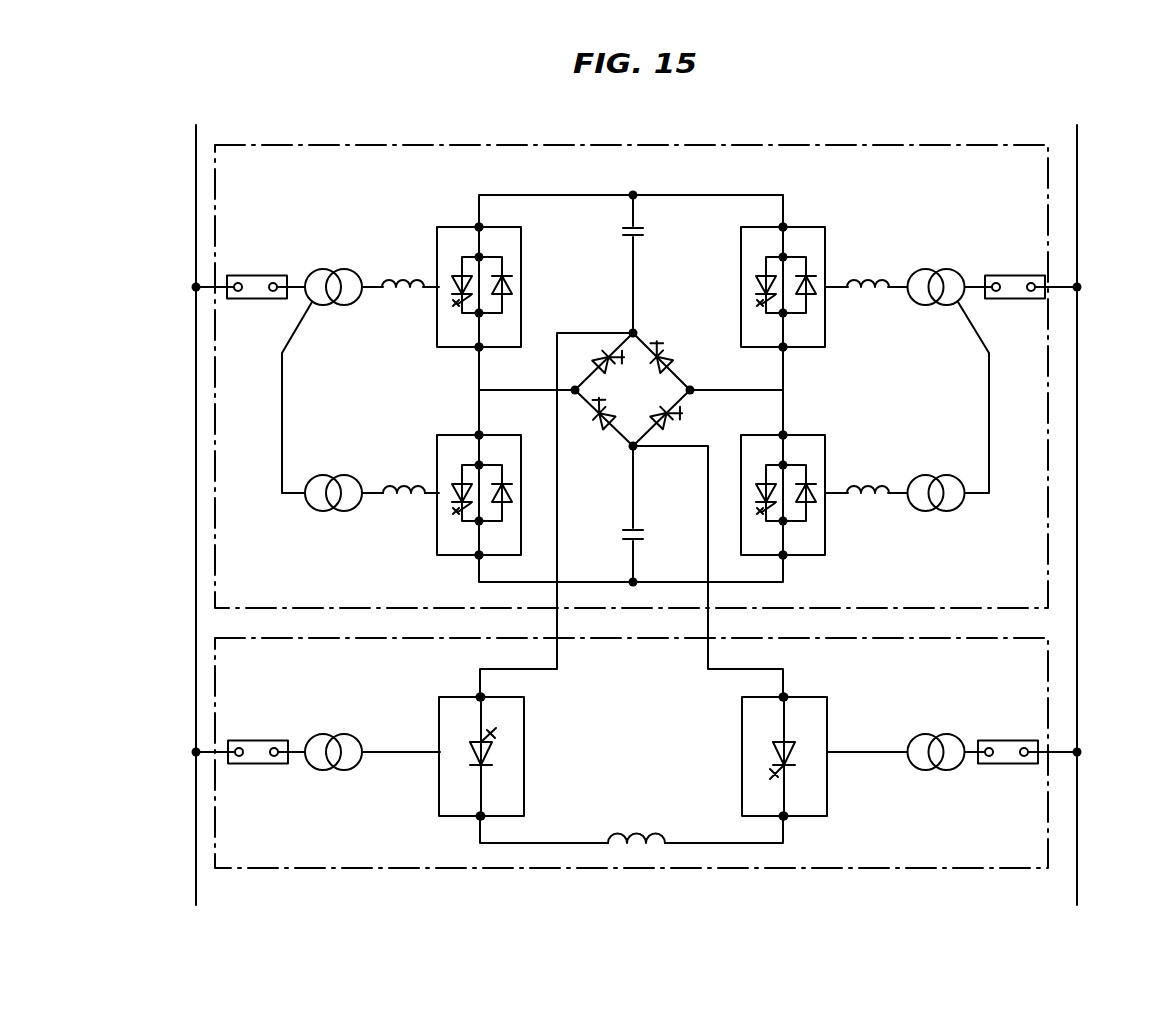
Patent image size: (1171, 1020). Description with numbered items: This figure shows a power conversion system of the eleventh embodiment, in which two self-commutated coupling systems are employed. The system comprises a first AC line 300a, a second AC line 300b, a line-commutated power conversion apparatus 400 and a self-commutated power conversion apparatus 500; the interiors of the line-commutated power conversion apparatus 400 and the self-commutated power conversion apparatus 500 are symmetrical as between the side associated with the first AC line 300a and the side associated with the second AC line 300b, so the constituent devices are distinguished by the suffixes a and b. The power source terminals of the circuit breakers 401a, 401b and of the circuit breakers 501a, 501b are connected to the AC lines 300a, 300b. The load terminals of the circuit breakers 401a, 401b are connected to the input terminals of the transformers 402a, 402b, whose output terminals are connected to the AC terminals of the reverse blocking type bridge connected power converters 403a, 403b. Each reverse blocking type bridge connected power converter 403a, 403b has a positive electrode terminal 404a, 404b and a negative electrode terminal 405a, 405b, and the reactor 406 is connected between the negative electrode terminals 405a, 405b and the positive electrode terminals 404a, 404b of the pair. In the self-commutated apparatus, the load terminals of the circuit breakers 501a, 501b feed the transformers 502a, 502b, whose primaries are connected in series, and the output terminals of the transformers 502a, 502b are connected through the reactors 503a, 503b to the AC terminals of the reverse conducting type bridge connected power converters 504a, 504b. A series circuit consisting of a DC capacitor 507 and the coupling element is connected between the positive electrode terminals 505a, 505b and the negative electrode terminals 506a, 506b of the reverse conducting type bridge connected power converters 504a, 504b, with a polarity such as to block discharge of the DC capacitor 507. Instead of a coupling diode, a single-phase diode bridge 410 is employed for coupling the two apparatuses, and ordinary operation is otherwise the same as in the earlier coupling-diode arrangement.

The first AC line 300a is at (196, 350).
The second AC line 300b is at (1078, 348).
The line-commutated power conversion apparatus 400 is at (802, 870).
The circuit breaker 401a is at (252, 740).
The circuit breaker 401b is at (1000, 740).
The transformer 402a is at (335, 720).
The transformer 402b is at (935, 720).
The reverse blocking type bridge connected power converter 403a is at (524, 730).
The reverse blocking type bridge connected power converter 403b is at (828, 775).
The positive electrode terminal 404a is at (480, 697).
The positive electrode terminal 404b is at (783, 816).
The negative electrode terminal 405a is at (480, 816).
The negative electrode terminal 405b is at (783, 697).
The reactor 406 is at (619, 832).
The single-phase diode bridge 410 is at (652, 402).
The self-commutated power conversion apparatus 500 is at (915, 120).
The circuit breaker 501a is at (250, 275).
The circuit breaker 501b is at (1002, 275).
The transformer 502a is at (332, 254).
The transformer 502b is at (929, 270).
The reactor 503a is at (398, 278).
The reactor 503b is at (856, 278).
The reverse conducting type bridge connected power converter 504a is at (523, 268).
The reverse conducting type bridge connected power converter 504b is at (743, 250).
The positive electrode terminal 505a is at (479, 227).
The positive electrode terminal 505b is at (783, 227).
The negative electrode terminal 506a is at (479, 347).
The negative electrode terminal 506b is at (783, 347).
The DC capacitor 507 is at (645, 230).